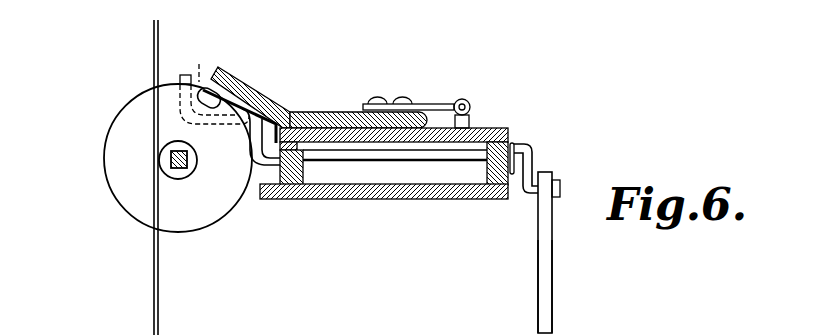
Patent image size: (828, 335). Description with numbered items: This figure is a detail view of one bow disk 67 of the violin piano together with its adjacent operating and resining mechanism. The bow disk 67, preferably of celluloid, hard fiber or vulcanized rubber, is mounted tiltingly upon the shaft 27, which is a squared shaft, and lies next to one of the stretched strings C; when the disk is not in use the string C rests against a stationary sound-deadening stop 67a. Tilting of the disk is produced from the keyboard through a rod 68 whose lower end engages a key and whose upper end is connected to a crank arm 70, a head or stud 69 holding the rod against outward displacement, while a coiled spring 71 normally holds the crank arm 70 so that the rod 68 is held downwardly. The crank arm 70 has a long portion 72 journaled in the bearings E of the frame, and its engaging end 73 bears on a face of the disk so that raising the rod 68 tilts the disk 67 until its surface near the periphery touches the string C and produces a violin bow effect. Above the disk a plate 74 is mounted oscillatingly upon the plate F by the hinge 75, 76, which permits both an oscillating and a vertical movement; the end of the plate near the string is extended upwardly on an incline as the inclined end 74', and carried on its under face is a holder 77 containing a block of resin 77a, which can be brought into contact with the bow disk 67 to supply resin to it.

The strings C is at (153, 276).
The shaft 27 is at (169, 160).
The bow disk 67 is at (222, 212).
The sound-deadening stop 67a is at (181, 179).
The engaging end of crank 73 is at (218, 126).
The plate 74 is at (358, 97).
The inclined end of plate 74' is at (268, 94).
The hinge 75 is at (413, 106).
The hinge 76 is at (470, 113).
The holder 77 is at (226, 80).
The block of resin 77a is at (208, 92).
The plate F is at (486, 126).
The bearings E is at (297, 186).
The long portion of crank arm 72 is at (417, 153).
The coiled spring 71 is at (515, 174).
The crank arm 70 is at (538, 178).
The head or stud 69 is at (560, 187).
The rod 68 is at (553, 288).